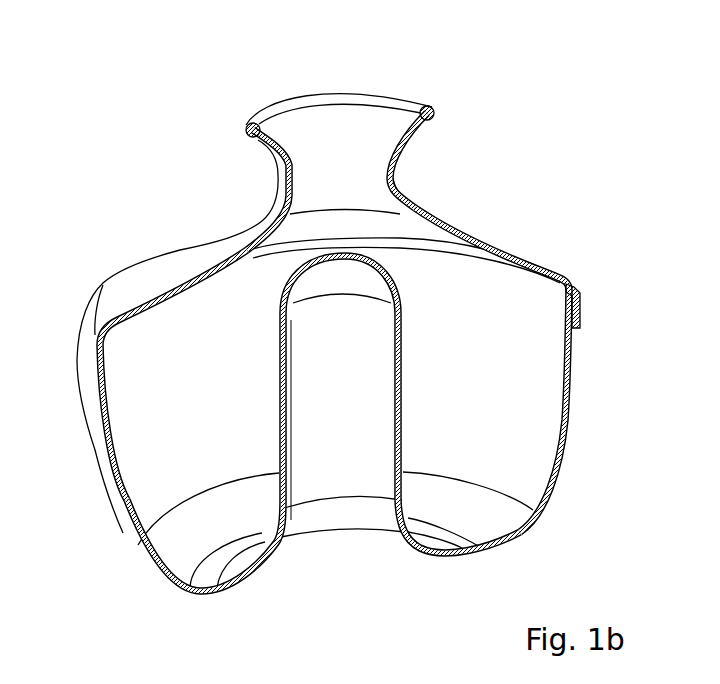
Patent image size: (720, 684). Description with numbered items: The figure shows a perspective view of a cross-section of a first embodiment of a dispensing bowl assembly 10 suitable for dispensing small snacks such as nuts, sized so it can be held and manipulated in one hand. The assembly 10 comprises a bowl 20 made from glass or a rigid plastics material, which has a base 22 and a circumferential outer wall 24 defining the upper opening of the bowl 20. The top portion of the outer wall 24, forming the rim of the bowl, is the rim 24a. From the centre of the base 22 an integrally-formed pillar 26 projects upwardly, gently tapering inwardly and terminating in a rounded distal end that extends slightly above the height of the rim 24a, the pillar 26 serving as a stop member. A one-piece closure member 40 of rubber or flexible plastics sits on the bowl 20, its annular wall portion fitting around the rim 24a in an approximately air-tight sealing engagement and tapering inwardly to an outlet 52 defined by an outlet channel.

The dispensing bowl assembly 10 is at (335, 327).
The bowl 20 is at (567, 433).
The base 22 is at (217, 594).
The outer wall 24 is at (101, 433).
The rim 24a is at (553, 279).
The pillar 26 is at (340, 437).
The closure member 40 is at (99, 268).
The outlet 52 is at (368, 80).